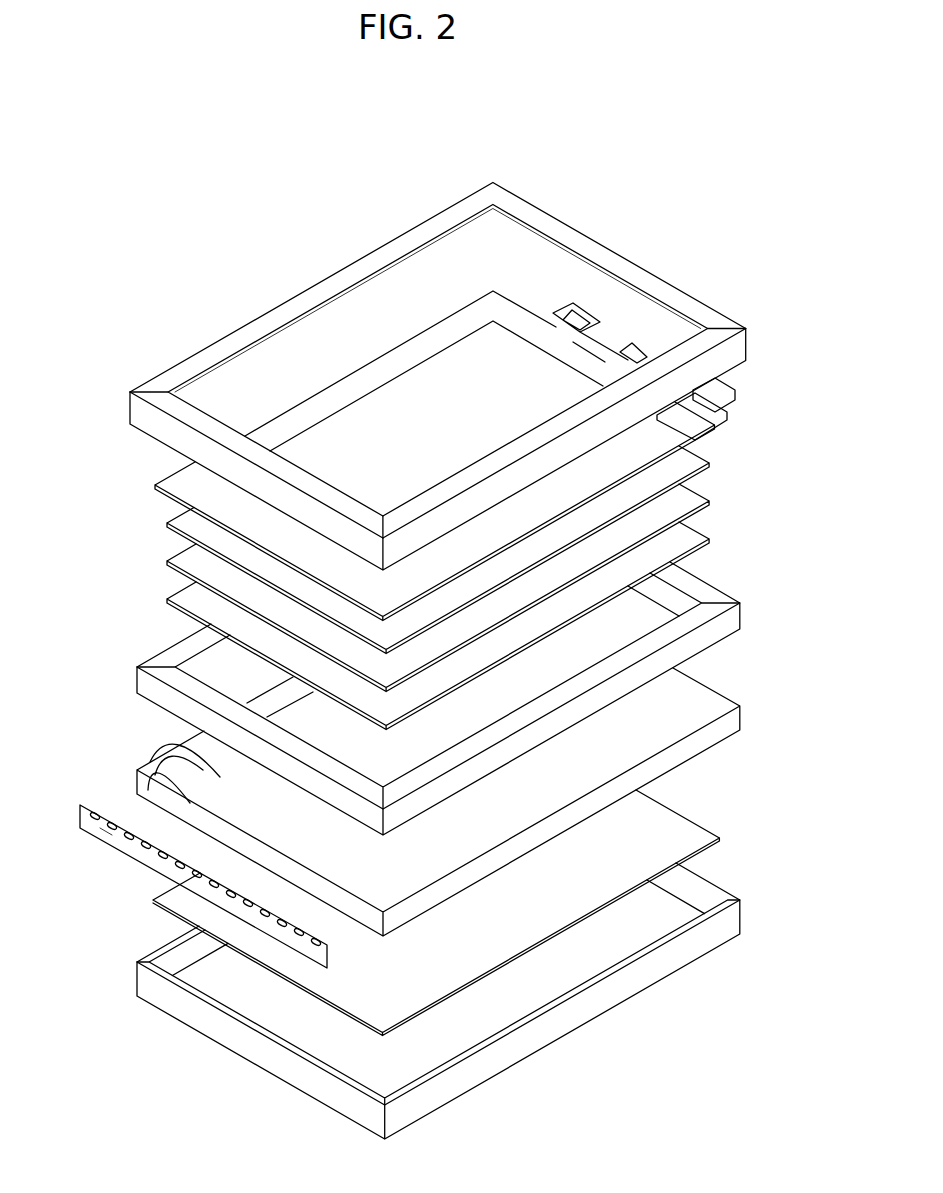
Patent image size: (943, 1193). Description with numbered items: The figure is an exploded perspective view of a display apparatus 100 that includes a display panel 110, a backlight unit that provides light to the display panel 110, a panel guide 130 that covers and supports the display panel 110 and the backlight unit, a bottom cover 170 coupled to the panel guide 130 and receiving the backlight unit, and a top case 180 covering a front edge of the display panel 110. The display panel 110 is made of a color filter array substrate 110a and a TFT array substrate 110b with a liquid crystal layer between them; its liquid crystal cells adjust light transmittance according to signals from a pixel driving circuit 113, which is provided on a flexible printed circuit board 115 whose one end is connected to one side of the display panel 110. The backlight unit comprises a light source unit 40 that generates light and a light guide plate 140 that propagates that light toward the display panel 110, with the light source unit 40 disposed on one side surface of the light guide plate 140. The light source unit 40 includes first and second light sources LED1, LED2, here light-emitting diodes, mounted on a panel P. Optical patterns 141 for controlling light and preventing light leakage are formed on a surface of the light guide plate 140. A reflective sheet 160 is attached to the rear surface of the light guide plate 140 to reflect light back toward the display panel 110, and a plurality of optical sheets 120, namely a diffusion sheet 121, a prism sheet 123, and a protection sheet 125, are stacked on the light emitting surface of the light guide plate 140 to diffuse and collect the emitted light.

The display apparatus 100 is at (627, 155).
The display panel 110 is at (449, 411).
The color filter array substrate 110a is at (434, 380).
The TFT array substrate 110b is at (333, 400).
The pixel driving circuit 113 is at (633, 356).
The flexible printed circuit board 115 is at (558, 338).
The top case 180 is at (748, 345).
The optical sheets 120 is at (374, 588).
The protection sheet 125 is at (167, 523).
The prism sheet 123 is at (167, 561).
The diffusion sheet 121 is at (90, 505).
The panel guide 130 is at (137, 680).
The light guide plate 140 is at (400, 802).
The optical patterns 141 is at (148, 790).
The light source unit 40 is at (181, 886).
The first light source LED1 is at (100, 818).
The second light source LED2 is at (300, 934).
The panel P is at (135, 845).
The reflective sheet 160 is at (700, 833).
The bottom cover 170 is at (750, 922).